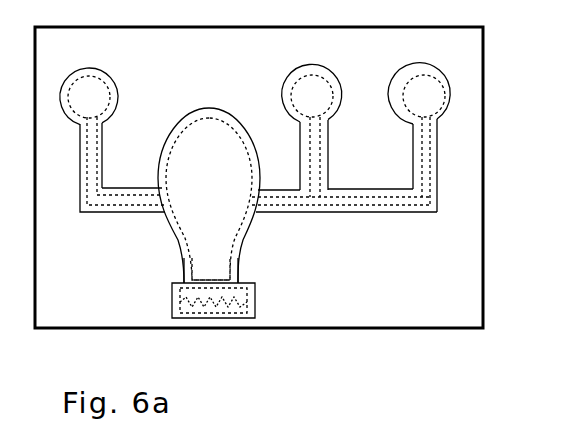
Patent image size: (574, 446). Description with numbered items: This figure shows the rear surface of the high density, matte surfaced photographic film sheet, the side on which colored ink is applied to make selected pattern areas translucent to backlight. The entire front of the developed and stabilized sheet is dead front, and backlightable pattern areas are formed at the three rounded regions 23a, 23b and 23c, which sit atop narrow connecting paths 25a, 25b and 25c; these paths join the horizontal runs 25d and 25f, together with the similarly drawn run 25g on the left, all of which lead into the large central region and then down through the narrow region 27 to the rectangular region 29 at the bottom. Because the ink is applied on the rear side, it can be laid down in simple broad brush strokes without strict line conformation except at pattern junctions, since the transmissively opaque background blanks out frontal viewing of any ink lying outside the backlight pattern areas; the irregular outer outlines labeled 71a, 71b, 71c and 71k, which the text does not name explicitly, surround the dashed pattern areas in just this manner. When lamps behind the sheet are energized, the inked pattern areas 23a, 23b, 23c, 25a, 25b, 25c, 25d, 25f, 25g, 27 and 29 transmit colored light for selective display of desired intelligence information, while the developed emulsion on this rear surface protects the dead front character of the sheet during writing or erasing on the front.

The outer boundary of reservoir a 71a is at (405, 70).
The outer boundary of reservoir b 71b is at (330, 73).
The outer boundary of reservoir c 71c is at (110, 73).
The outer boundary of base 71k is at (247, 317).
The backlightable pattern area 23a is at (436, 97).
The backlightable pattern area 23b is at (322, 98).
The backlightable pattern area 23c is at (97, 99).
The backlightable pattern area 25a is at (427, 149).
The backlightable pattern area 25b is at (315, 153).
The backlightable pattern area 25c is at (95, 152).
The backlightable pattern area 25d is at (404, 200).
The backlightable pattern area 25f is at (287, 200).
The channel g 25g is at (113, 202).
The backlightable pattern area 27 is at (227, 269).
The backlightable pattern area 29 is at (183, 293).